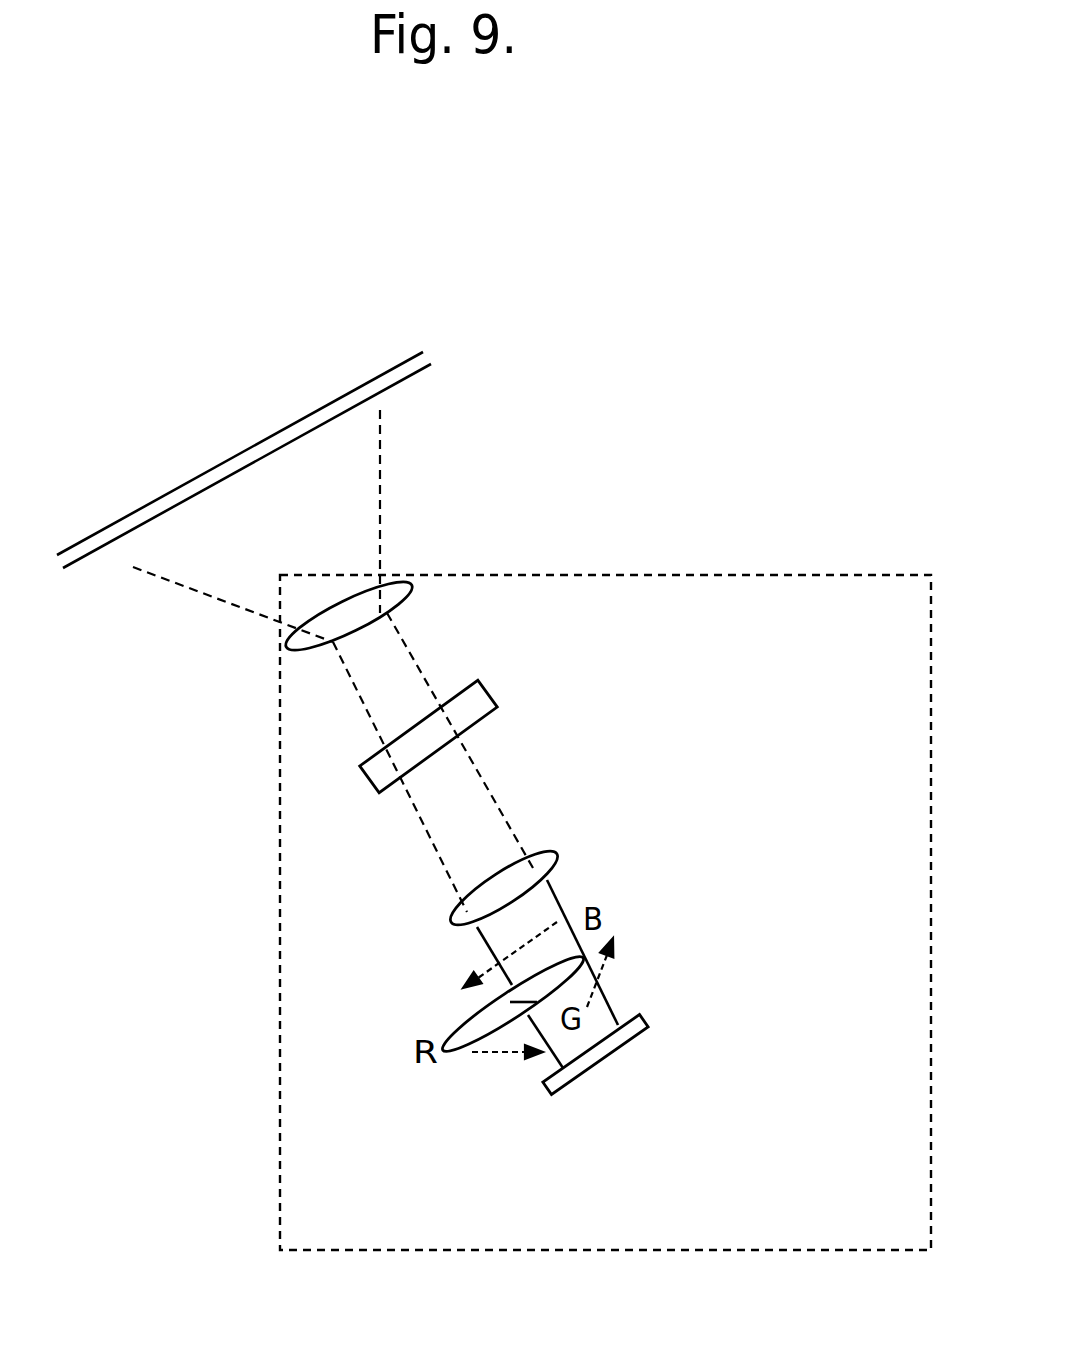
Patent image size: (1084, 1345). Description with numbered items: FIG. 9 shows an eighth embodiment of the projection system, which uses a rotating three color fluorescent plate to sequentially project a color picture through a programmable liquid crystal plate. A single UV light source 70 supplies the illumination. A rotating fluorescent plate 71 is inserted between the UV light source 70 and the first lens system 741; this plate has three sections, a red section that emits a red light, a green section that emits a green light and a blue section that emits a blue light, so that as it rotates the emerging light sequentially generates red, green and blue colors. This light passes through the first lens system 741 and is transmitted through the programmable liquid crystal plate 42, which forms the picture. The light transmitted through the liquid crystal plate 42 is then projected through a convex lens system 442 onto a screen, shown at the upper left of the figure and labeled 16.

The screen 16 is at (441, 340).
The convex lens system 442 is at (407, 587).
The programmable liquid crystal plate 42 is at (483, 713).
The first lens system 741 is at (457, 922).
The rotating fluorescent plate 71 is at (452, 1057).
The UV light source 70 is at (605, 1062).